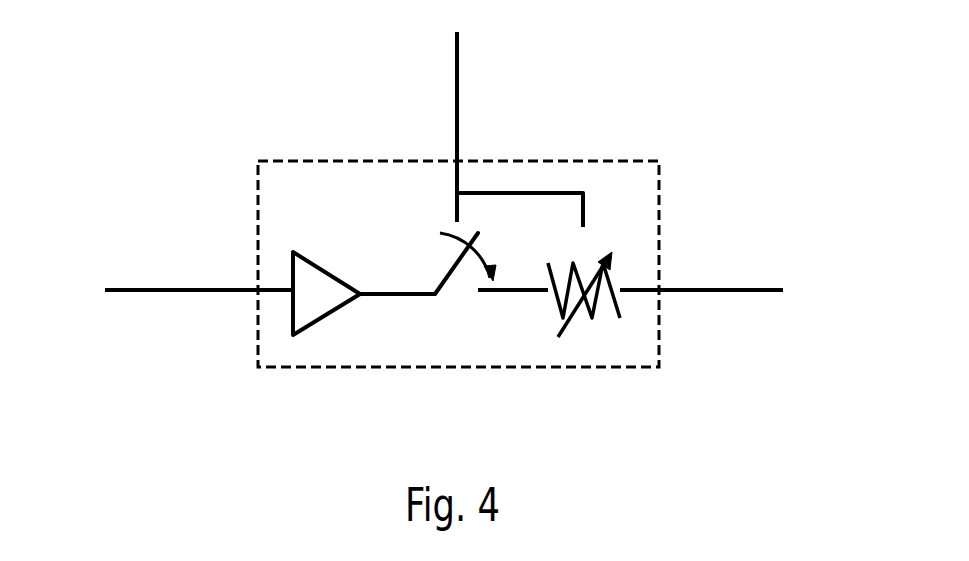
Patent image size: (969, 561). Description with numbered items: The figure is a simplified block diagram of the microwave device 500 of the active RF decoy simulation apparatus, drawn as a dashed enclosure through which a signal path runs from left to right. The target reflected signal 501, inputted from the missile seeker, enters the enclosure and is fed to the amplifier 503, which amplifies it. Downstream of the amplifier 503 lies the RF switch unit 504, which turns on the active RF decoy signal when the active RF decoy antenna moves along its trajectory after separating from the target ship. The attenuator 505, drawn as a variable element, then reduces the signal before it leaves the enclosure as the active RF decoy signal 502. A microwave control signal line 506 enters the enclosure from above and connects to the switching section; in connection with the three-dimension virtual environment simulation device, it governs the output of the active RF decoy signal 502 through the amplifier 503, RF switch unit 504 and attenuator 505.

The microwave device 500 is at (608, 160).
The target reflected signal 501 is at (223, 295).
The active RF decoy signal 502 is at (678, 287).
The amplifier 503 is at (307, 338).
The RF switch unit 504 is at (457, 305).
The attenuator 505 is at (592, 328).
The microwave control signal line 506 is at (458, 87).